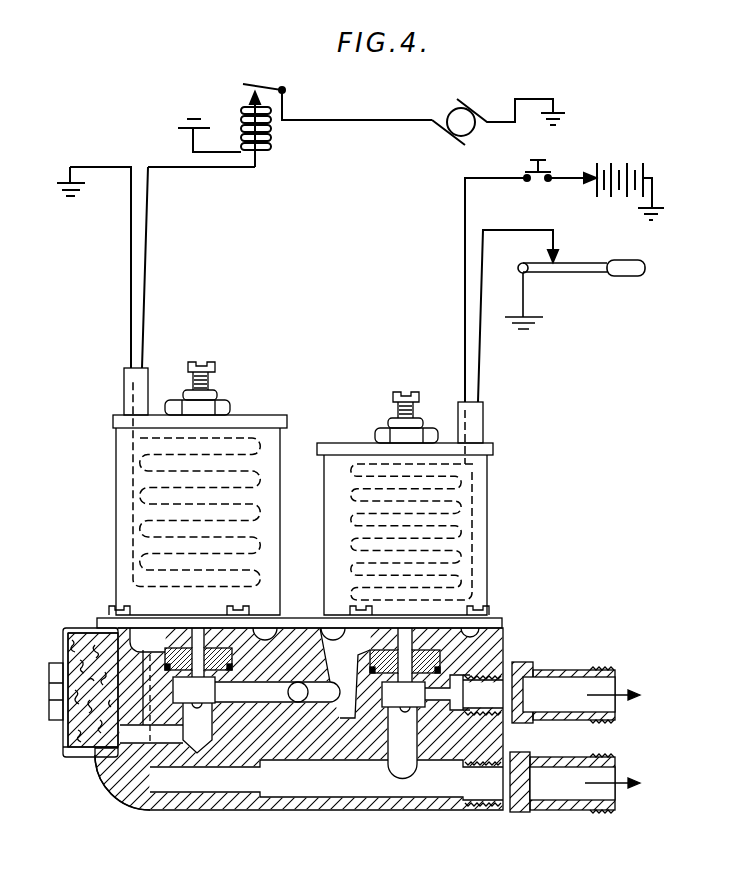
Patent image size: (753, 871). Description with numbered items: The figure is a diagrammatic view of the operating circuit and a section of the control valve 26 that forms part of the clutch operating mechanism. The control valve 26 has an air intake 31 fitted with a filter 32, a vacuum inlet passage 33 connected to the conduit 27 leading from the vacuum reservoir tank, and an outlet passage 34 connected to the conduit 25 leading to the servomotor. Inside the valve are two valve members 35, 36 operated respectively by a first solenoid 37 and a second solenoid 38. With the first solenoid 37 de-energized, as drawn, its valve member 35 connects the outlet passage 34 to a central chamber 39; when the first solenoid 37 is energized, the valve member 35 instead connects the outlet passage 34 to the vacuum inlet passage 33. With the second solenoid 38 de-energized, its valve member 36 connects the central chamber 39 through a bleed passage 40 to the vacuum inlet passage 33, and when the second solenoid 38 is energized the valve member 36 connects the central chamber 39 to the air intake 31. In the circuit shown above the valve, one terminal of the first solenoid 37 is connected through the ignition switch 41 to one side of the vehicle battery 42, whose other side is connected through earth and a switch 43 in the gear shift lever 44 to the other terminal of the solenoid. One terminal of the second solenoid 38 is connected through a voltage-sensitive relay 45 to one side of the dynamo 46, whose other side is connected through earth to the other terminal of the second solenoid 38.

The conduit 25 is at (592, 670).
The control valve 26 is at (113, 798).
The conduit 27 is at (612, 810).
The air intake 31 is at (170, 733).
The filter 32 is at (72, 710).
The vacuum inlet passage 33 is at (447, 793).
The outlet passage 34 is at (572, 676).
The valve member 35 is at (487, 627).
The valve member 36 is at (123, 627).
The first solenoid 37 is at (457, 528).
The second solenoid 38 is at (152, 523).
The central chamber 39 is at (348, 672).
The bleed passage 40 is at (63, 728).
The ignition switch 41 is at (545, 172).
The vehicle battery 42 is at (613, 160).
The switch 43 is at (550, 258).
The gear shift lever 44 is at (585, 273).
The voltage-sensitive relay 45 is at (277, 120).
The dynamo 46 is at (460, 121).